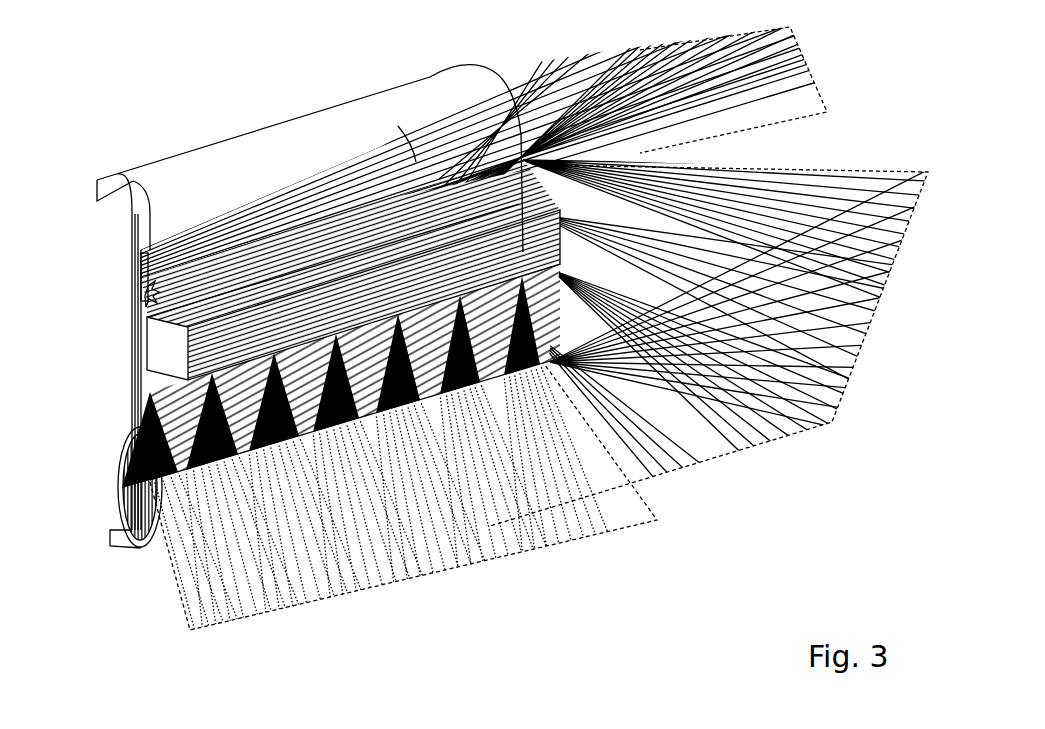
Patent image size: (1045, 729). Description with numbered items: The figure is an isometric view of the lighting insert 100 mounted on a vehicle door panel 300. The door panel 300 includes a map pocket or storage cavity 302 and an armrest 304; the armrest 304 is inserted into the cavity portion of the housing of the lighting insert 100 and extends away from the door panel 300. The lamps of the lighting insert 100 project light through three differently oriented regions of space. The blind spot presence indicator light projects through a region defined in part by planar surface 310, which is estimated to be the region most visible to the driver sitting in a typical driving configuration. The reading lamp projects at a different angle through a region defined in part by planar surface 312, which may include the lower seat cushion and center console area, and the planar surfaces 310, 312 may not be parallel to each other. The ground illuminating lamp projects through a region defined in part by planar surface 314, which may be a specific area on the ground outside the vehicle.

The vehicle door panel 300 is at (272, 119).
The lighting insert 100 is at (140, 268).
The armrest 304 is at (155, 350).
The map pocket or storage cavity 302 is at (118, 470).
The planar surface 310 is at (808, 53).
The planar surface 312 is at (762, 447).
The planar surface 314 is at (457, 575).